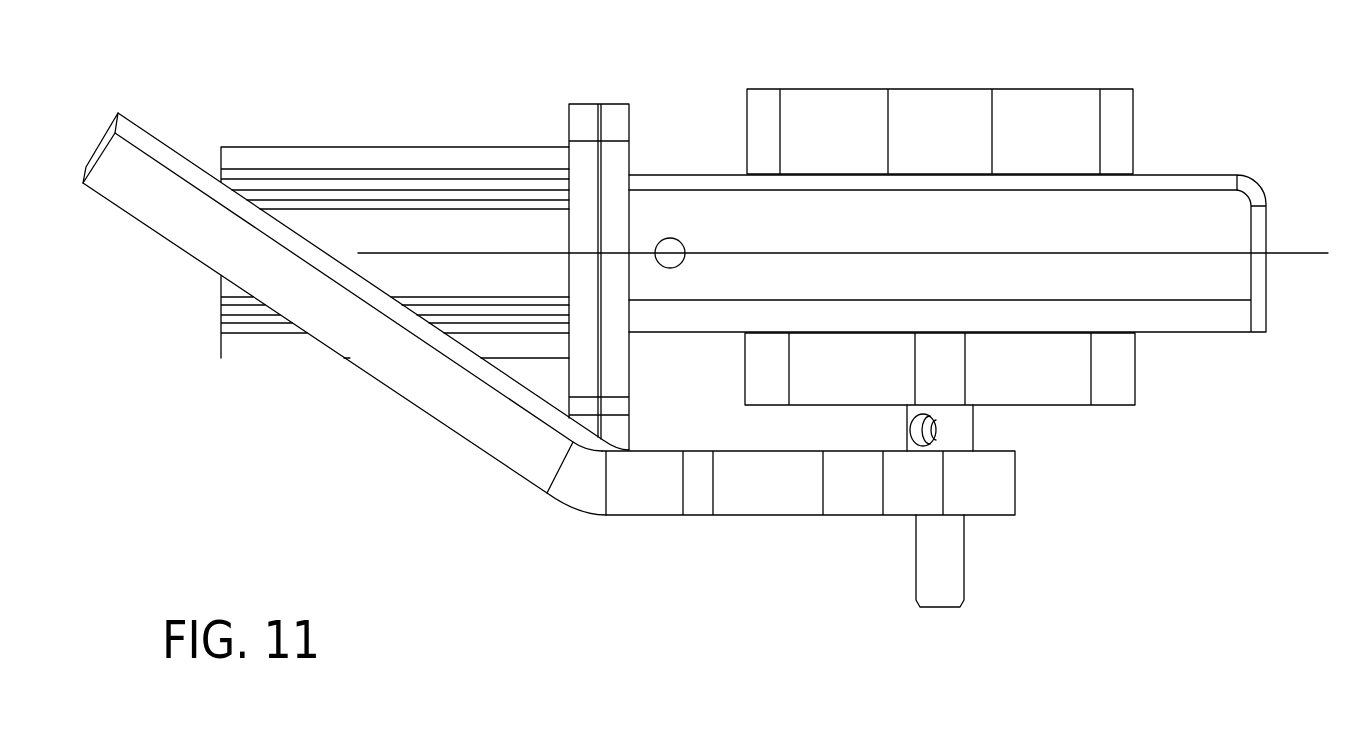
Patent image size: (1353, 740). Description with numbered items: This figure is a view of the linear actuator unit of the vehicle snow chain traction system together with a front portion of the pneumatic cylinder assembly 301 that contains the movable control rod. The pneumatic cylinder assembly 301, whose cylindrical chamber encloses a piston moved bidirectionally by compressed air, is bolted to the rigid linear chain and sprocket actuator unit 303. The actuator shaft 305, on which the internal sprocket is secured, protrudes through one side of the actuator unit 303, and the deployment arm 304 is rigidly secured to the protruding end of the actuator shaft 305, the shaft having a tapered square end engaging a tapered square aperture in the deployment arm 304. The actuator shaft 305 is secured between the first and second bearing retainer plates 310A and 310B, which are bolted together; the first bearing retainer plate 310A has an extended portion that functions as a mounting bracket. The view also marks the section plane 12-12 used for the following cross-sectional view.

The pneumatic cylinder assembly 301 is at (458, 178).
The linear chain and sprocket actuator unit 303 is at (1191, 290).
The deployment arm 304 is at (463, 413).
The actuator shaft 305 is at (938, 567).
The first bearing retainer plate 310A is at (1047, 133).
The second bearing retainer plate 310B is at (1048, 372).
The section plane 12- 12 is at (1303, 252).